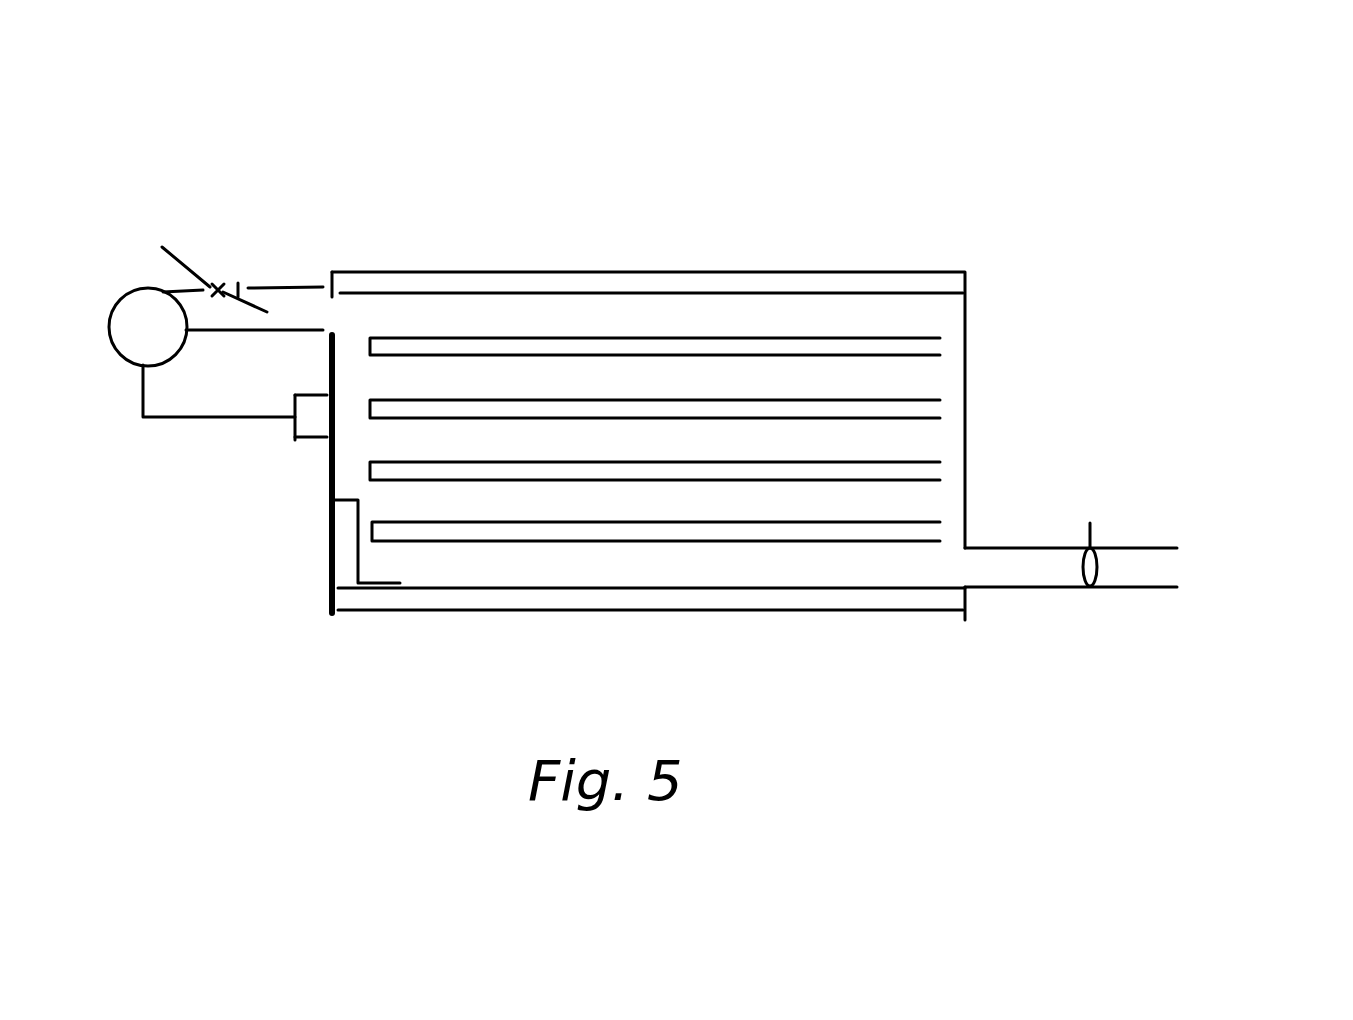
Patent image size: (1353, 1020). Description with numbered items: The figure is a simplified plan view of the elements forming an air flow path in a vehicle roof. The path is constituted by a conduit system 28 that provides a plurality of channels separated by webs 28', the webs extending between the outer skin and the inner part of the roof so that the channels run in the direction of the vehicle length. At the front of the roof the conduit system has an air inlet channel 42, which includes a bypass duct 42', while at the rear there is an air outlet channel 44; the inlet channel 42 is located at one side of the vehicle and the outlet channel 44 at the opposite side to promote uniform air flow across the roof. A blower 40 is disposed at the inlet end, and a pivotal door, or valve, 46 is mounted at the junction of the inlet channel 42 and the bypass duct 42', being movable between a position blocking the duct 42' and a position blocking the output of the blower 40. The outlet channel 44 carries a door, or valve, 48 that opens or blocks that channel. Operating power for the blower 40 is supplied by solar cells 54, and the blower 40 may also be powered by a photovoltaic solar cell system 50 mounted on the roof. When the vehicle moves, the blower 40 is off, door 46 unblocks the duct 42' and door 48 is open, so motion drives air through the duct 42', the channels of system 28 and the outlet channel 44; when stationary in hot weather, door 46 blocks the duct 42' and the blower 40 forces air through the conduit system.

The conduit system 28 is at (648, 356).
The webs 28' is at (655, 331).
The blower 40 is at (145, 308).
The air inlet channel 42 is at (307, 263).
The bypass duct 42' is at (206, 197).
The air outlet channel 44 is at (1032, 563).
The pivotal door 46 is at (247, 305).
The door 48 is at (1100, 568).
The photovoltaic solar cell system 50 is at (297, 437).
The solar cells 54 is at (330, 540).